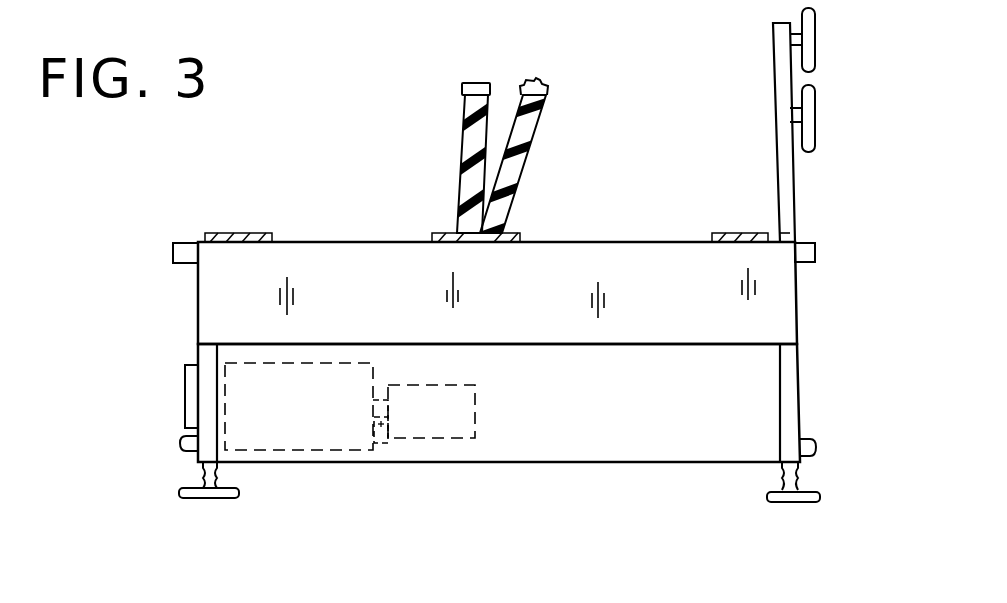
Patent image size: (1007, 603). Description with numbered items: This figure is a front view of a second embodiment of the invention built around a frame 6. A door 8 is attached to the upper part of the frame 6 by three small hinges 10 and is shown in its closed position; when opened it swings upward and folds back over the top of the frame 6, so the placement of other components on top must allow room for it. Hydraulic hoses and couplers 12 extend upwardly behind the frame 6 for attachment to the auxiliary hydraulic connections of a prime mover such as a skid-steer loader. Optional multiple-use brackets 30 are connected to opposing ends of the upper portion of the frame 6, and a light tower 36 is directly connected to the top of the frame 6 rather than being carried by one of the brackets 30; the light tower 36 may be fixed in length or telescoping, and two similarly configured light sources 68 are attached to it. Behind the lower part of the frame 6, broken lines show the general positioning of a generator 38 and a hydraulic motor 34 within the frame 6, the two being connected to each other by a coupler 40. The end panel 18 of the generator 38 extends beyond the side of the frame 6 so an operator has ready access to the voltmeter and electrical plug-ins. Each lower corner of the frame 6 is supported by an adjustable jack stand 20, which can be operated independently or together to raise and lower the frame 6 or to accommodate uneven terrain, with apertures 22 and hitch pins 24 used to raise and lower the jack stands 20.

The frame 6 is at (718, 383).
The door 8 is at (775, 305).
The hinges 10 is at (435, 232).
The hydraulic hoses and couplers 12 is at (468, 188).
The end panel 18 is at (188, 372).
The adjustable jack stand 20 is at (208, 495).
The apertures 22 is at (203, 470).
The hitch pins 24 is at (182, 441).
The multiple-use brackets 30 is at (176, 255).
The hydraulic motor 34 is at (443, 422).
The light tower 36 is at (786, 186).
The generator 38 is at (313, 427).
The coupler 40 is at (393, 460).
The light sources 68 is at (808, 46).